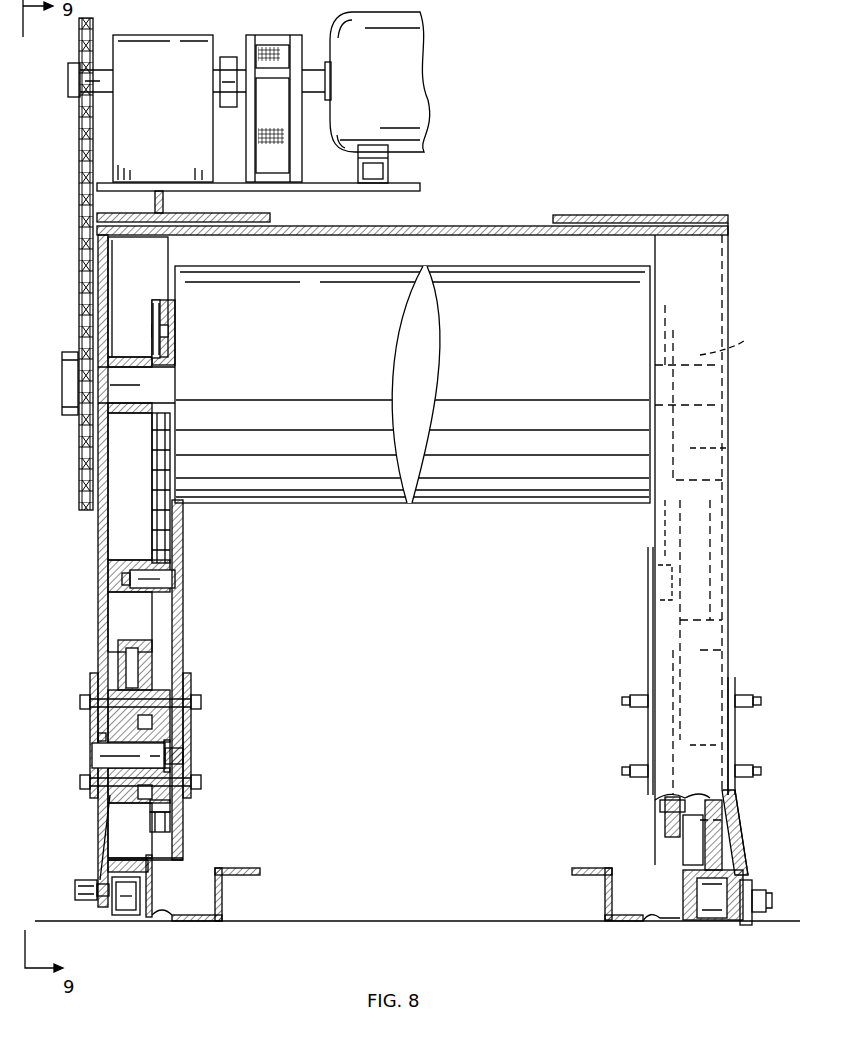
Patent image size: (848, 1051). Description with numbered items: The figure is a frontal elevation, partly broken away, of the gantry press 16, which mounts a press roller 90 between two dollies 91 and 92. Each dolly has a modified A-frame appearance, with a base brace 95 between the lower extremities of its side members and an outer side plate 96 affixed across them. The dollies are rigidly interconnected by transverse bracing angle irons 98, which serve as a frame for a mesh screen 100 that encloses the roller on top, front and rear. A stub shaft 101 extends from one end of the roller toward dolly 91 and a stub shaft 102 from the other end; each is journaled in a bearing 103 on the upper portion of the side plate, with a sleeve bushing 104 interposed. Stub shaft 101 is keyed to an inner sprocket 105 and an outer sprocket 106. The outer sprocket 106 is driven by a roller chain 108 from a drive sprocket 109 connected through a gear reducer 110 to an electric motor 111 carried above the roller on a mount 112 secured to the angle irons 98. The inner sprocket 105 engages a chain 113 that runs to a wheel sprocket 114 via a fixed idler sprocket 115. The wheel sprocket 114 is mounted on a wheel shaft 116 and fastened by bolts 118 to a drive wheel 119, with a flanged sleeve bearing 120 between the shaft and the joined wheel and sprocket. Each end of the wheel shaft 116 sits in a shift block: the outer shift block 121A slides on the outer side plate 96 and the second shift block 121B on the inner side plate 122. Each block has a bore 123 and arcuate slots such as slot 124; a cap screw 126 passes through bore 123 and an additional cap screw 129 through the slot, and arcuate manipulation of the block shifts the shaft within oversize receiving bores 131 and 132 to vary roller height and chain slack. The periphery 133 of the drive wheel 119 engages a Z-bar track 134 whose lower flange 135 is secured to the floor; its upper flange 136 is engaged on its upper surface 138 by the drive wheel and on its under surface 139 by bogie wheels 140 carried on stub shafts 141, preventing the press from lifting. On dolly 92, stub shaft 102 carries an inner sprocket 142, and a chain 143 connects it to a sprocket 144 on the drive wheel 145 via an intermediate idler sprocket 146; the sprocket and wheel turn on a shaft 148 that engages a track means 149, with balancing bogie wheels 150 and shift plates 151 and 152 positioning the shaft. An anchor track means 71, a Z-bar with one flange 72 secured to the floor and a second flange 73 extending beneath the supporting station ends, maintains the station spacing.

The gantry press 16 is at (512, 168).
The anchor track means 71 is at (600, 884).
The one flange 72 is at (650, 925).
The second flange 73 is at (597, 868).
The press roller 90 is at (385, 505).
The dolly 91 is at (94, 548).
The dolly 92 is at (735, 588).
The base brace 95 is at (742, 850).
The outer side plate 96 is at (100, 610).
The angle irons 98 is at (236, 236).
The mesh screen 100 is at (512, 226).
The stub shaft 101 is at (160, 383).
The stub shaft 102 is at (715, 351).
The bearing 103 is at (122, 356).
The sleeve bushing 104 is at (162, 355).
The inner sprocket 105 is at (158, 310).
The outer sprocket 106 is at (70, 416).
The roller chain 108 is at (79, 188).
The drive sprocket 109 is at (80, 68).
The gear reducer 110 is at (152, 42).
The electric motor 111 is at (420, 68).
The mount 112 is at (330, 192).
The chain 113 is at (165, 525).
The wheel sprocket 114 is at (168, 822).
The fixed idler sprocket 115 is at (172, 576).
The wheel shaft 116 is at (160, 740).
The bolts 118 is at (170, 806).
The drive wheel 119 is at (108, 845).
The flanged sleeve bearing 120 is at (110, 795).
The outer shift block 121A is at (92, 780).
The second shift block 121B is at (190, 776).
The inner side plate 122 is at (183, 652).
The bore 123 is at (90, 752).
The slot 124 is at (80, 698).
The cap screw 126 is at (82, 778).
The cap screw 129 is at (85, 696).
The receiving bore 131 is at (100, 735).
The receiving bore 132 is at (185, 756).
The periphery 133 is at (152, 870).
The track 134 is at (162, 915).
The lower flange 135 is at (185, 922).
The upper flange 136 is at (108, 866).
The upper surface 138 is at (170, 858).
The under surface 139 is at (75, 902).
The bogie wheels 140 is at (125, 910).
The stub shafts 141 is at (75, 900).
The inner sprocket 142 is at (728, 452).
The chain 143 is at (663, 512).
The sprocket 144 is at (670, 830).
The drive wheel 145 is at (712, 835).
The intermediate idler sprocket 146 is at (668, 620).
The shaft 148 is at (700, 740).
The track means 149 is at (678, 905).
The balancing bogie wheels 150 is at (700, 912).
The shift plate 151 is at (735, 680).
The shift plate 152 is at (638, 690).